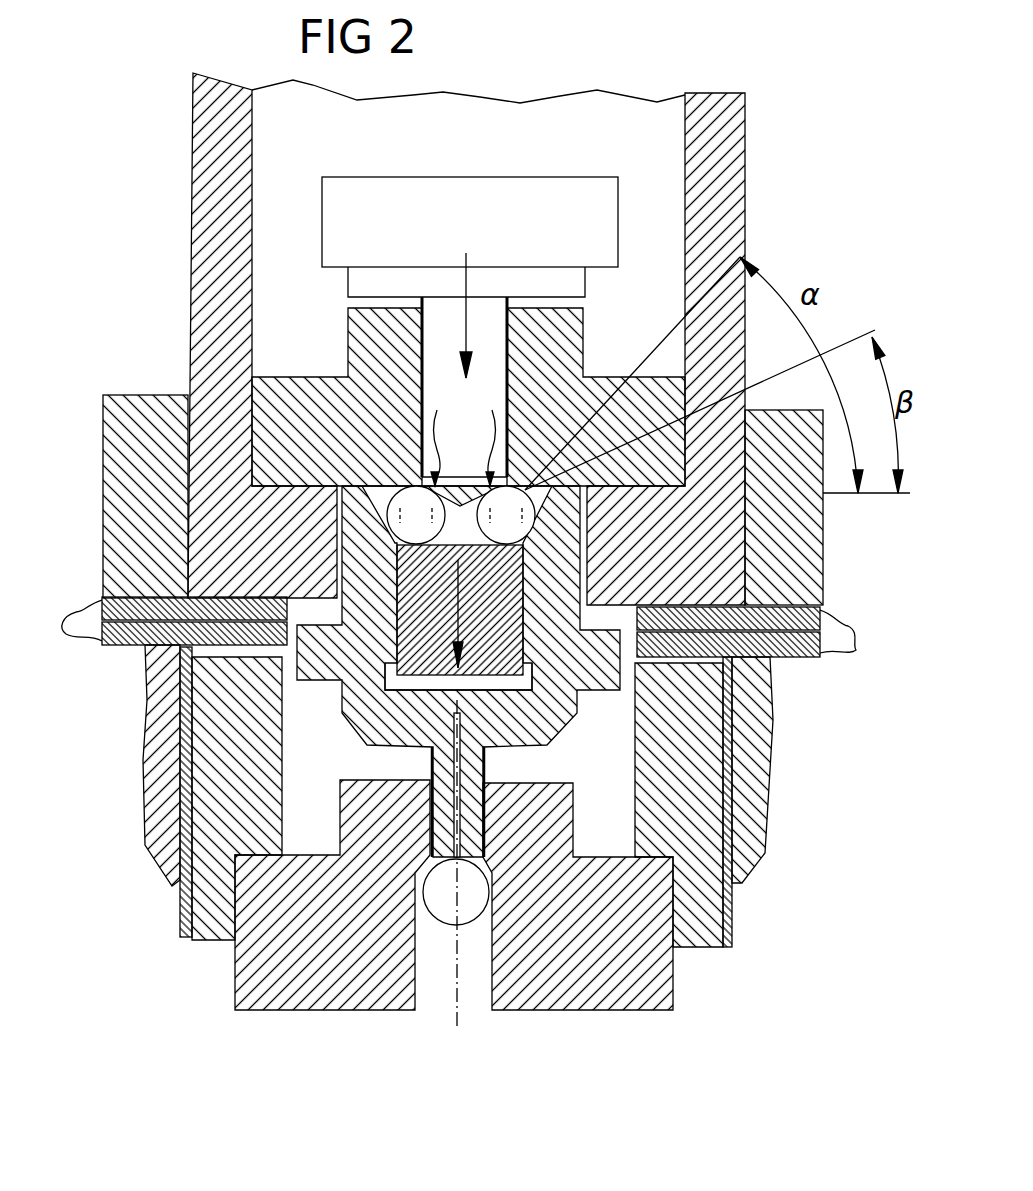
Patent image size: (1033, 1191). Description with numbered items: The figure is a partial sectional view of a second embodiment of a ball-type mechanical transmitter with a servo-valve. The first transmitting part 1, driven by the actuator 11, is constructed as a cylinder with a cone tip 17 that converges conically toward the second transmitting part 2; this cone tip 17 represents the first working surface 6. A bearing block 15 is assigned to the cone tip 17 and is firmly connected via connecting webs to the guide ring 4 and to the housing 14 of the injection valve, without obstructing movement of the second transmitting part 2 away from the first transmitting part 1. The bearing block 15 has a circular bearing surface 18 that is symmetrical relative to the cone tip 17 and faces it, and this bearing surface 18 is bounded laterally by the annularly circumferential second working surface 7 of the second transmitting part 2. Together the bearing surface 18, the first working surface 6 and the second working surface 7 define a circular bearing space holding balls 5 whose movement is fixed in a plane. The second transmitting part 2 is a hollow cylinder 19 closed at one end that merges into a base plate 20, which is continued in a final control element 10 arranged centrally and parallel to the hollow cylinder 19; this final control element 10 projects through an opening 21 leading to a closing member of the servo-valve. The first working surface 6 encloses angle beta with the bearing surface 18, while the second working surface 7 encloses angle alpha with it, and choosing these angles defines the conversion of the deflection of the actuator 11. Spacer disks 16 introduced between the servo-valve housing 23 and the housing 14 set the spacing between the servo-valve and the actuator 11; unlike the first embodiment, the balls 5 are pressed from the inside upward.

The first transmitting part 1 is at (460, 315).
The second transmitting part 2 is at (377, 567).
The guide ring 4 is at (272, 405).
The balls 5 is at (345, 465).
The first working surface 6 is at (463, 434).
The second working surface 7 is at (346, 517).
The final control element 10 is at (485, 792).
The actuator 11 is at (500, 203).
The housing 14 is at (600, 550).
The bearing block 15 is at (500, 610).
The spacer disks 16 is at (66, 634).
The cone tip 17 is at (464, 492).
The bearing surface 18 is at (438, 557).
The hollow cylinder 19 is at (673, 682).
The base plate 20 is at (657, 758).
The opening 21 is at (412, 807).
The servo-valve housing 23 is at (213, 765).